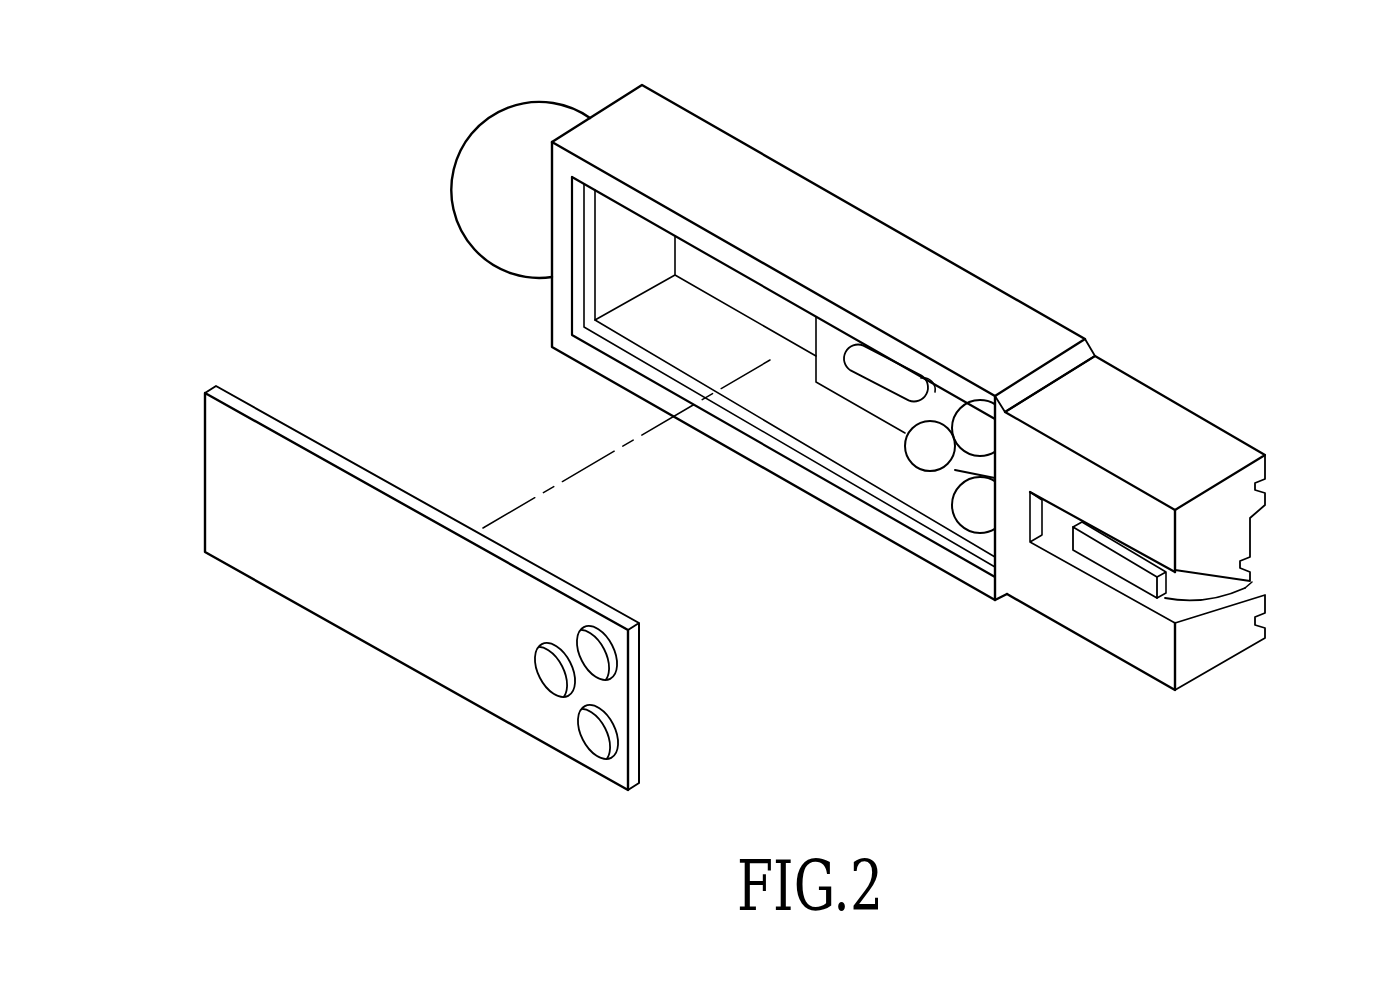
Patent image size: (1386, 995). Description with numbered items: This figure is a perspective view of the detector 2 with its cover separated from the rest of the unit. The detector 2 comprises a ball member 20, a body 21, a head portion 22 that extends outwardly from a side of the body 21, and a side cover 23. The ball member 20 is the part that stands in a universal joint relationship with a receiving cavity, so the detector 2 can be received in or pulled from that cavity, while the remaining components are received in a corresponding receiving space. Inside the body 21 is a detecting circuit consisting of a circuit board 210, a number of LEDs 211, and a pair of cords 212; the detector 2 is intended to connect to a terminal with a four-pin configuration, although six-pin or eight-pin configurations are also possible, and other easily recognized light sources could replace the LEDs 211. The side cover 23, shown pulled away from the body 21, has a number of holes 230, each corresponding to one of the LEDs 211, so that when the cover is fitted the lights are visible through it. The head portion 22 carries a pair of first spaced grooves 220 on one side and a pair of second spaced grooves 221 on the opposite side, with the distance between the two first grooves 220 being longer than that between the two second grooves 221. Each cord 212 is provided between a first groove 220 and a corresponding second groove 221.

The detector 2 is at (912, 186).
The ball member 20 is at (516, 130).
The body 21 is at (797, 193).
The head portion 22 is at (1183, 507).
The side cover 23 is at (422, 588).
The circuit board 210 is at (857, 390).
The LEDs 211 is at (927, 463).
The cords 212 is at (1168, 598).
The first spaced grooves 220 is at (1248, 580).
The second spaced grooves 221 is at (1120, 548).
The holes 230 is at (543, 670).